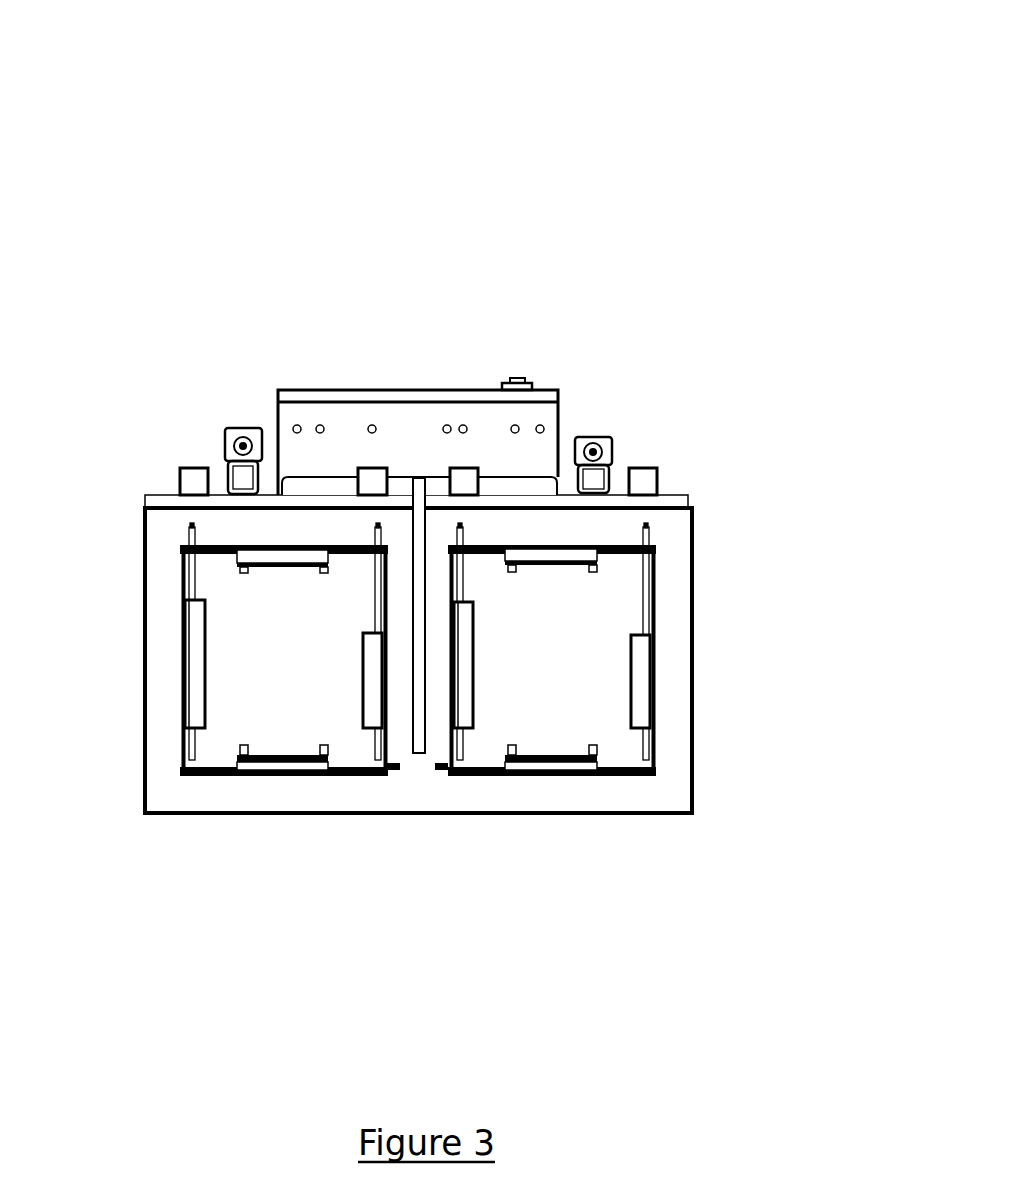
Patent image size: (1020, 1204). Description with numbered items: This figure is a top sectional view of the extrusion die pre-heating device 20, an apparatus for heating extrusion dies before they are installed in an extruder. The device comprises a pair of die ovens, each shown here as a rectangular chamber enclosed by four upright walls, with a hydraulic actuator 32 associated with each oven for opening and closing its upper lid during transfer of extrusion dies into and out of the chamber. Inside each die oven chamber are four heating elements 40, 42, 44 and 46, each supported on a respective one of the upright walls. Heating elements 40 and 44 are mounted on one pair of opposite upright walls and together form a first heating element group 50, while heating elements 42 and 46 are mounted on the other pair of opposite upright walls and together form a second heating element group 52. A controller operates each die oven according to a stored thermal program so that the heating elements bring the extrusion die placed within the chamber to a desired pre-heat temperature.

The extrusion die pre-heating device 20 is at (690, 102).
The hydraulic actuator 32 is at (233, 428).
The heating element 40 is at (216, 664).
The heating element 42 is at (277, 586).
The heating element 44 is at (350, 675).
The heating element 46 is at (298, 740).
The first heating element group 50 is at (116, 593).
The second heating element group 52 is at (230, 937).